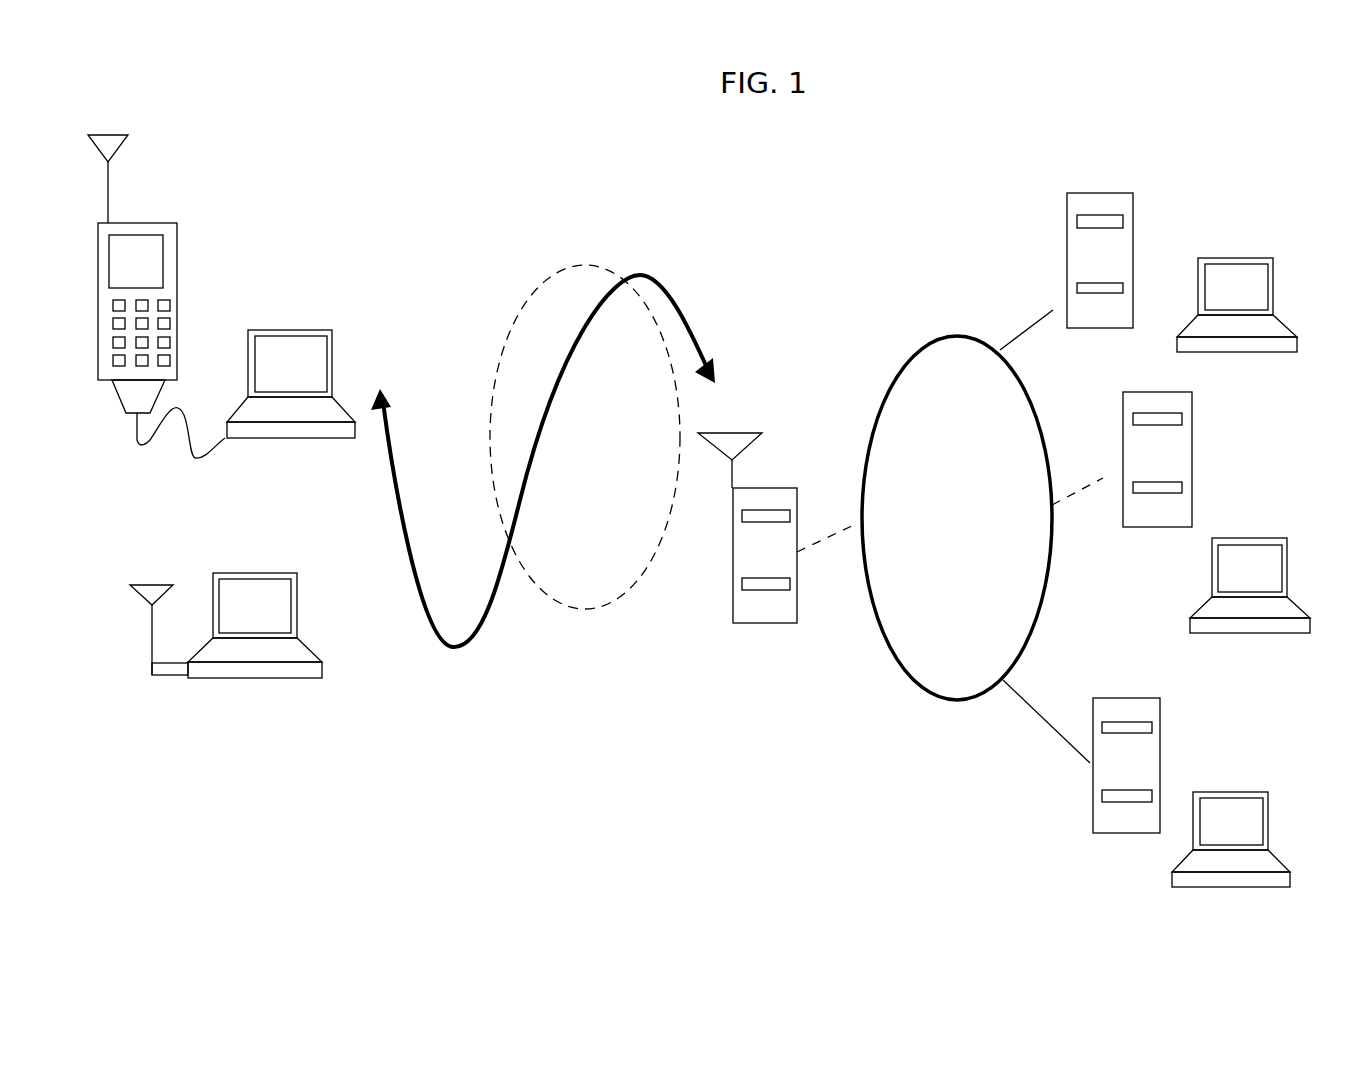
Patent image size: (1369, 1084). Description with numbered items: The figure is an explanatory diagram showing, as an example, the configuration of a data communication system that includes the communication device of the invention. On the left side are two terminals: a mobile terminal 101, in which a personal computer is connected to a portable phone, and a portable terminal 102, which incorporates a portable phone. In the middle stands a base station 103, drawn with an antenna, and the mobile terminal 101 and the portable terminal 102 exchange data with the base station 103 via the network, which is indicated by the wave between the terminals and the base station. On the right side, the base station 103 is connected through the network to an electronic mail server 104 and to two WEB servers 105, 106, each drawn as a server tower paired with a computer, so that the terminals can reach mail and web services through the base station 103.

The mobile terminal 101 is at (383, 358).
The portable terminal 102 is at (207, 678).
The base station 103 is at (838, 448).
The electronic mail server 104 is at (1197, 225).
The WEB server 105 is at (1267, 480).
The WEB server 106 is at (1210, 757).